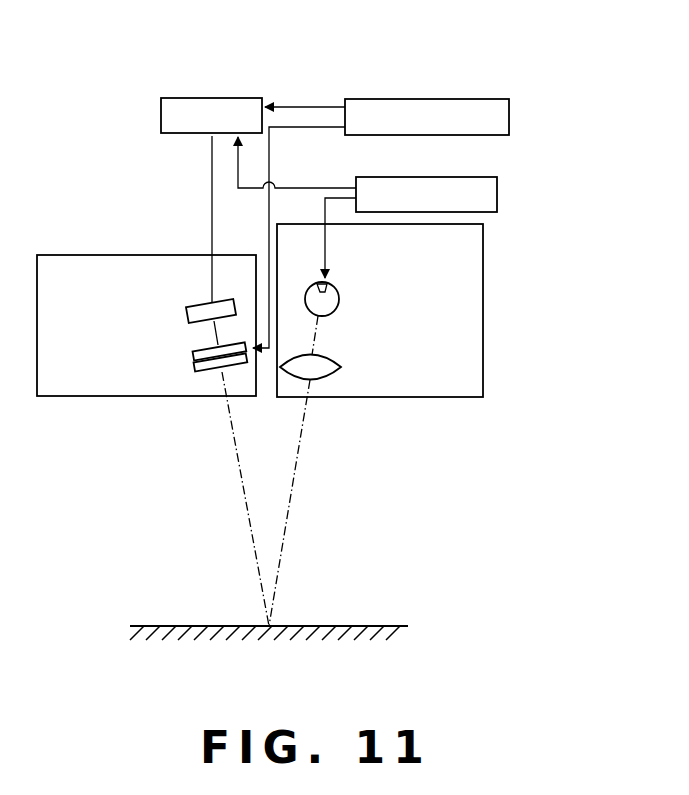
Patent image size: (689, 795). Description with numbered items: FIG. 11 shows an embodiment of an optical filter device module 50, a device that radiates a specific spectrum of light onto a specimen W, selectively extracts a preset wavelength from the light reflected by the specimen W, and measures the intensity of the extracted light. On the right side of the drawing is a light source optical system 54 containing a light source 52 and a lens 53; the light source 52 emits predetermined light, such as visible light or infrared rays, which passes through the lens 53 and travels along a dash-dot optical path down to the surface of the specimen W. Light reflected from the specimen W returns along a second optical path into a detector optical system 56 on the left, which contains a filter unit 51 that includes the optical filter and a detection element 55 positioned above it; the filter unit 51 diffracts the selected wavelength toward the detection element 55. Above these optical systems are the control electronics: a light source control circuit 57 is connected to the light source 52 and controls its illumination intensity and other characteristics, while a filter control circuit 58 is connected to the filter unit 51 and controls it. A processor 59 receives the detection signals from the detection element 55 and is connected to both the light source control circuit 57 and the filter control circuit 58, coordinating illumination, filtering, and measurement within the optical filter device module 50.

The optical filter device module 50 is at (513, 64).
The filter unit 51 is at (192, 355).
The light source 52 is at (339, 300).
The lens 53 is at (334, 362).
The light source optical system 54 is at (483, 265).
The detection element 55 is at (187, 313).
The detector optical system 56 is at (96, 255).
The light source control circuit 57 is at (497, 195).
The filter control circuit 58 is at (161, 116).
The processor 59 is at (509, 113).
The specimen W is at (363, 626).